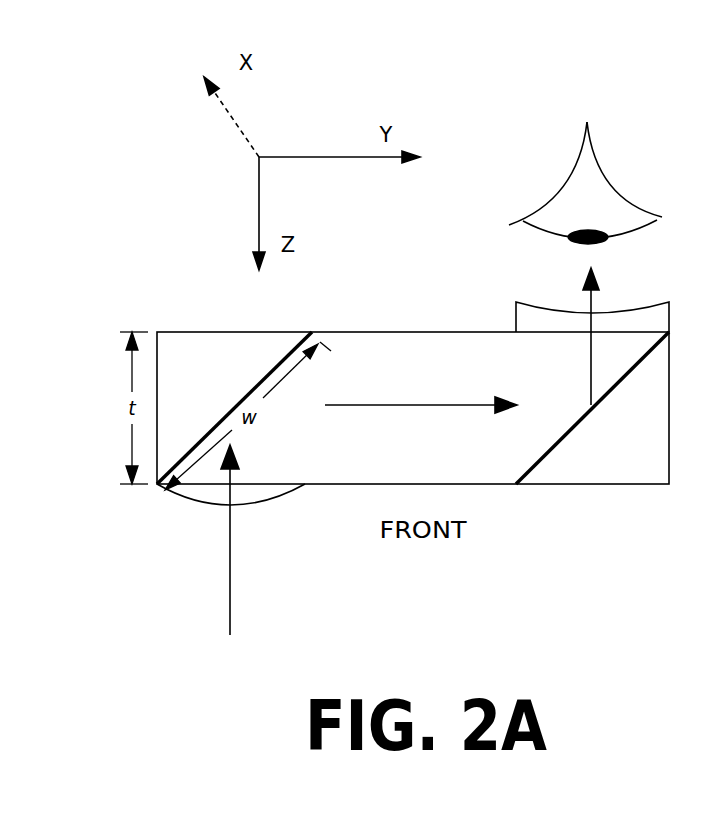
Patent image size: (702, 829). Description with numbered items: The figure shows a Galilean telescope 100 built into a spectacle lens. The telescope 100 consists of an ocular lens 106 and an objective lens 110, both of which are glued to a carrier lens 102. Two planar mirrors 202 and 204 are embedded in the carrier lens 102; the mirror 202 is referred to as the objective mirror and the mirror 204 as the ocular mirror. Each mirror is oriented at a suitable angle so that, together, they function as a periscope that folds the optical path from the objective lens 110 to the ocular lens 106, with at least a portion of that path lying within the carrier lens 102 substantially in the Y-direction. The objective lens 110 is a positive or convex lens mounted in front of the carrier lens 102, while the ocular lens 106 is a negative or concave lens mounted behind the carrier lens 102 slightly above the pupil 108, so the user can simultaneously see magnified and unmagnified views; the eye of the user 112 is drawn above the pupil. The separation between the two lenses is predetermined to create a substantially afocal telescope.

The Galilean telescope 100 is at (480, 160).
The carrier lens 102 is at (408, 331).
The ocular lens 106 is at (643, 305).
The pupil 108 is at (580, 243).
The objective lens 110 is at (197, 503).
The finger 112 is at (607, 211).
The objective mirror 202 is at (254, 384).
The ocular mirror 204 is at (563, 437).